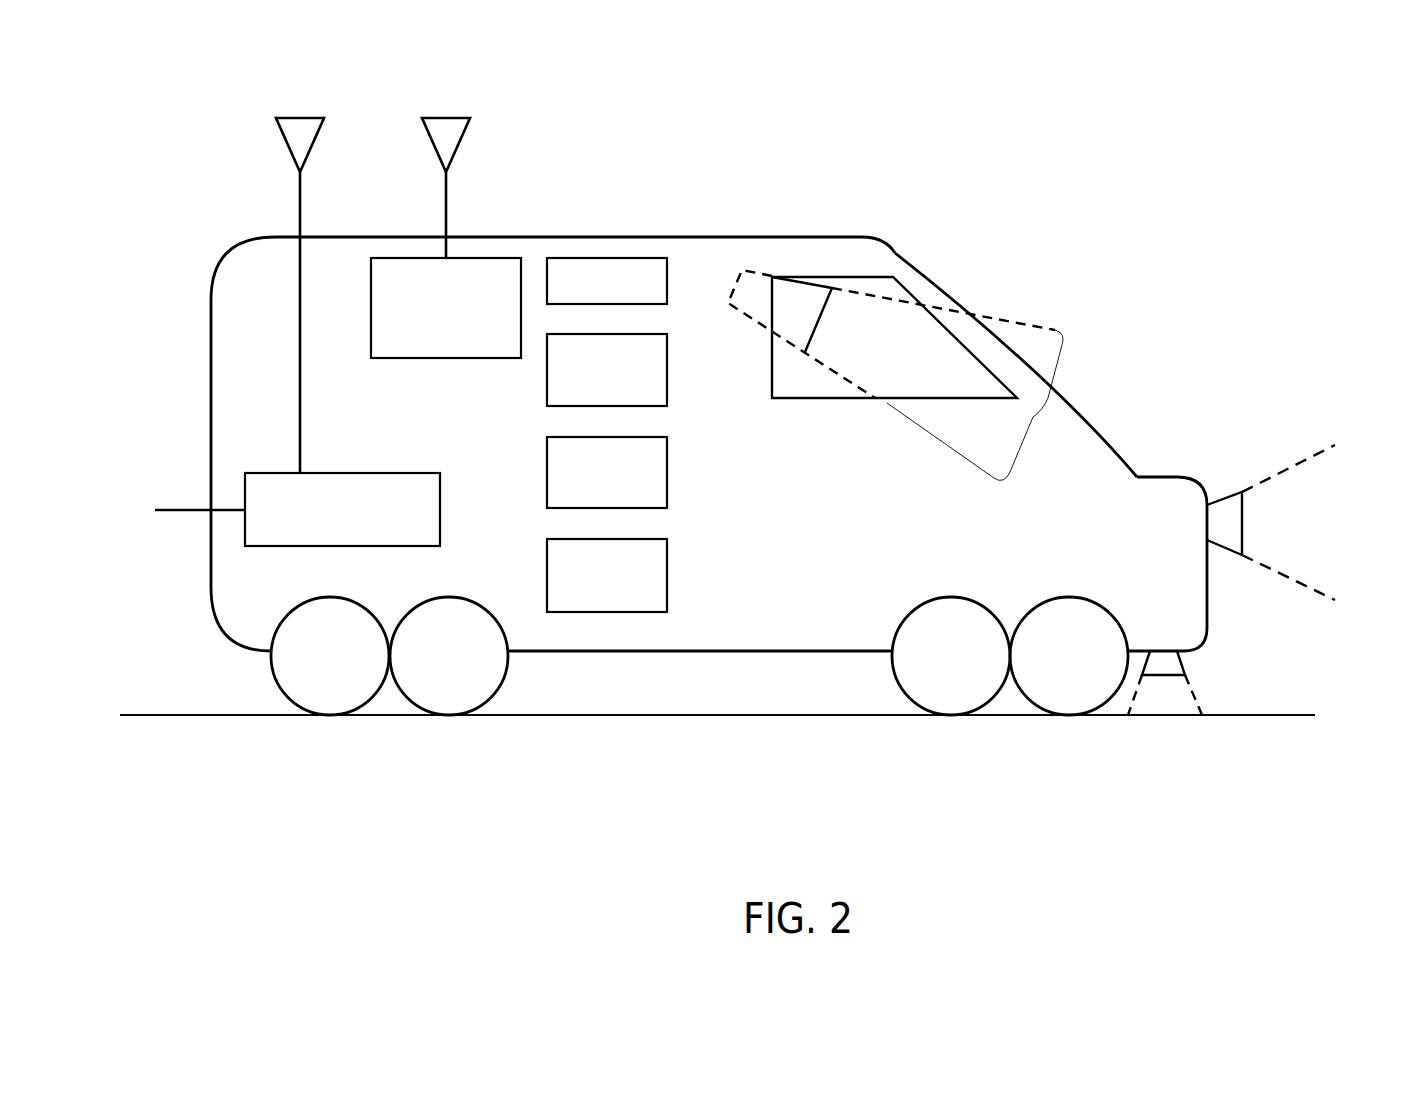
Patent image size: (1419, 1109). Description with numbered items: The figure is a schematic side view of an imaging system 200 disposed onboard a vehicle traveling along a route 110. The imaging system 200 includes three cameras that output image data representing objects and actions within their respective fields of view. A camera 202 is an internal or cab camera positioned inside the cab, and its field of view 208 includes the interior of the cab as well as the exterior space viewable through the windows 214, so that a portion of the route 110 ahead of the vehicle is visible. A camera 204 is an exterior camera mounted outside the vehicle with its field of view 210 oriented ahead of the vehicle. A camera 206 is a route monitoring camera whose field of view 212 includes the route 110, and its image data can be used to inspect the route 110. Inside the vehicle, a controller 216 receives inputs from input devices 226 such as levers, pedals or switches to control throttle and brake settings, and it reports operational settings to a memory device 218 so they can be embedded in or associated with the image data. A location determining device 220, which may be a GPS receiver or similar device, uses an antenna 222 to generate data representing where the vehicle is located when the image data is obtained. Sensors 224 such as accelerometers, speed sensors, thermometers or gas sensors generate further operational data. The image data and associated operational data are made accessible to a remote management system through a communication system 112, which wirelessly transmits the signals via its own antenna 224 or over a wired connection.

The imaging system 200 is at (1203, 765).
The route 110 is at (1270, 716).
The communication system 112 is at (375, 473).
The camera 202 is at (805, 298).
The camera 204 is at (1223, 553).
The camera 206 is at (1188, 662).
The field of view 208 is at (1068, 418).
The field of view 210 is at (1342, 445).
The field of view 212 is at (1202, 718).
The windows 214 is at (800, 400).
The controller 216 is at (607, 258).
The memory device 218 is at (668, 368).
The location determining device 220 is at (483, 257).
The antenna 222 is at (463, 147).
The sensors 224 is at (668, 574).
The input devices 226 is at (668, 470).